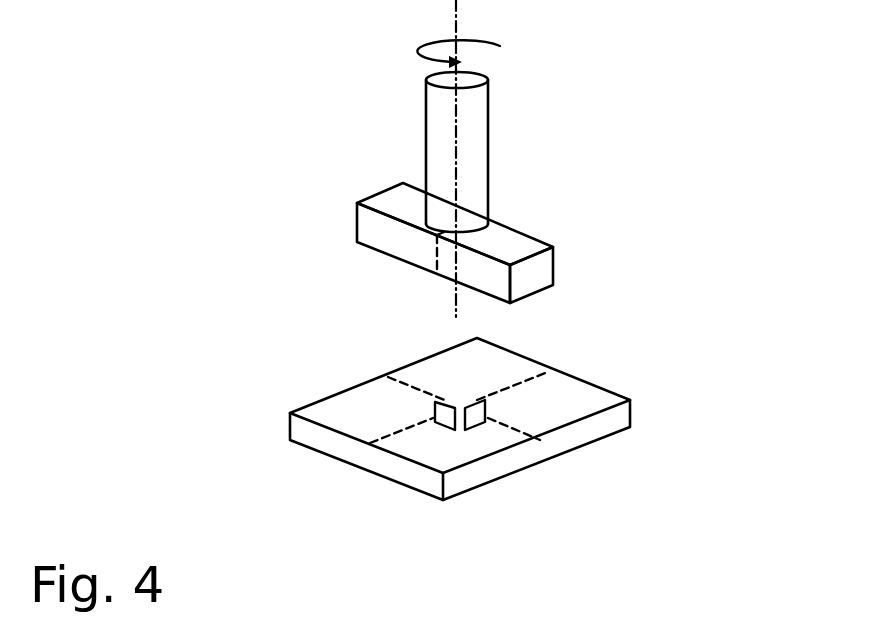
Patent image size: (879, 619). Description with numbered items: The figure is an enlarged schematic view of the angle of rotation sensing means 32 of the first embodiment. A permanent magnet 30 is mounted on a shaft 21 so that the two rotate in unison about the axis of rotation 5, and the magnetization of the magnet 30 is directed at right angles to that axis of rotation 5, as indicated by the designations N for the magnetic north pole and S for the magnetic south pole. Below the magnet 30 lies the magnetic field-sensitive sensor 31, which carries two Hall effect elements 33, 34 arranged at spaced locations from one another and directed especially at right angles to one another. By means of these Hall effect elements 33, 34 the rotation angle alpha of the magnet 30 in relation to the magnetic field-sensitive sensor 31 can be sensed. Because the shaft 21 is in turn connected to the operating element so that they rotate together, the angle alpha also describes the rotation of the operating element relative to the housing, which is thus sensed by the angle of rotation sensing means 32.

The axis of rotation 5 is at (458, 133).
The shaft 21 is at (435, 113).
The magnet 30 is at (533, 277).
The magnetic field-sensitive sensor 31 is at (577, 431).
The angle of rotation sensing means 32 is at (200, 50).
The Hall effect element 33 is at (443, 418).
The Hall effect element 34 is at (478, 418).